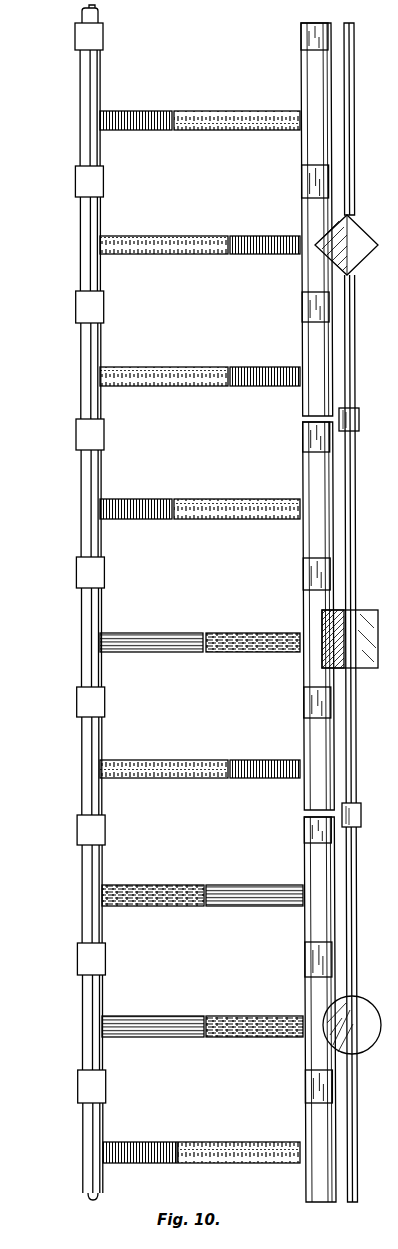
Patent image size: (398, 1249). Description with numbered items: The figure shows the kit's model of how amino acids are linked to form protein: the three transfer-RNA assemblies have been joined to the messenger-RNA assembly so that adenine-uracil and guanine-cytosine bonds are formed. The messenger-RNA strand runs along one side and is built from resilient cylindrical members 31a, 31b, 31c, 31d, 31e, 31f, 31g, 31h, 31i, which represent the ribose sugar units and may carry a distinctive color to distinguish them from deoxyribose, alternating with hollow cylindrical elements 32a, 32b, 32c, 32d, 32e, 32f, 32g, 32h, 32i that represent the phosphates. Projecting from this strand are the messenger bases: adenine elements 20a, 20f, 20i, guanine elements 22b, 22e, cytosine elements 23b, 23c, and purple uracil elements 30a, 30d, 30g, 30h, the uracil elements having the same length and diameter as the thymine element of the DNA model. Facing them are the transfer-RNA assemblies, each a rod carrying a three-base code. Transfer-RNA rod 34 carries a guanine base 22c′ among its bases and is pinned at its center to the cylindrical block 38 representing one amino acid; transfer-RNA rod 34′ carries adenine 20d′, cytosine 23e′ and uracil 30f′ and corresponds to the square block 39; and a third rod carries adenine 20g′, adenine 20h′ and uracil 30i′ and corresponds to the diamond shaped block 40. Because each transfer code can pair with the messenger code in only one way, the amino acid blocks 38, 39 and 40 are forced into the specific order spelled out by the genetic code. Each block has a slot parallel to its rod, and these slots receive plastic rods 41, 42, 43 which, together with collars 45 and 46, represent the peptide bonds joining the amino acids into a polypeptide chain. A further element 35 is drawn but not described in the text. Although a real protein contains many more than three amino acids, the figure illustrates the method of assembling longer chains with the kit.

The adenine base element 20a is at (143, 1142).
The adenine base element 20d′ is at (246, 760).
The adenine base element 20f is at (140, 499).
The adenine base element 20g′ is at (246, 367).
The adenine base element 20h′ is at (246, 236).
The adenine base element 20i is at (137, 111).
The guanine base element 22b is at (142, 1016).
The guanine base element 22c′ is at (249, 885).
The guanine base element 22e is at (150, 633).
The cytosine base element 23b is at (244, 1016).
The cytosine base element 23c is at (160, 885).
The cytosine base element 23e′ is at (244, 633).
The uracil base element 30a is at (231, 1142).
The uracil base element 30d is at (150, 760).
The uracil base element 30f′ is at (220, 499).
The uracil base element 30g is at (150, 367).
The uracil base element 30h is at (140, 236).
The uracil base element 30i′ is at (221, 111).
The resilient cylindrical member 31a is at (88, 1149).
The resilient cylindrical member 31b is at (86, 1022).
The resilient cylindrical member 31c is at (86, 897).
The resilient cylindrical member 31d is at (86, 770).
The resilient cylindrical member 31e is at (86, 660).
The resilient cylindrical member 31f is at (86, 514).
The resilient cylindrical member 31g is at (86, 400).
The resilient cylindrical member 31h is at (86, 244).
The resilient cylindrical member 31i is at (86, 133).
The hollow cylindrical element 32a is at (80, 1090).
The hollow cylindrical element 32b is at (78, 960).
The hollow cylindrical element 32c is at (78, 832).
The hollow cylindrical element 32d is at (78, 710).
The hollow cylindrical element 32e is at (80, 580).
The hollow cylindrical element 32f is at (78, 440).
The hollow cylindrical element 32g is at (76, 308).
The hollow cylindrical element 32h is at (76, 182).
The hollow cylindrical element 32i is at (76, 38).
The transfer-RNA rod 34 is at (318, 1174).
The transfer-RNA rod 34′ is at (312, 792).
The coupling block 35 is at (300, 45).
The cylindrical block 38 is at (364, 1000).
The square block 39 is at (368, 610).
The diamond shaped block 40 is at (360, 266).
The plastic rod 41 is at (350, 1160).
The plastic rod 42 is at (352, 745).
The plastic rod 43 is at (351, 203).
The collar 45 is at (358, 826).
The collar 46 is at (356, 418).